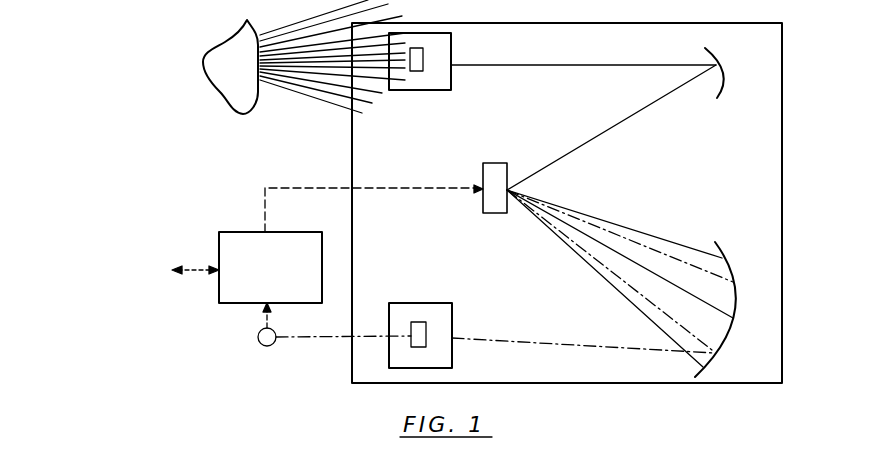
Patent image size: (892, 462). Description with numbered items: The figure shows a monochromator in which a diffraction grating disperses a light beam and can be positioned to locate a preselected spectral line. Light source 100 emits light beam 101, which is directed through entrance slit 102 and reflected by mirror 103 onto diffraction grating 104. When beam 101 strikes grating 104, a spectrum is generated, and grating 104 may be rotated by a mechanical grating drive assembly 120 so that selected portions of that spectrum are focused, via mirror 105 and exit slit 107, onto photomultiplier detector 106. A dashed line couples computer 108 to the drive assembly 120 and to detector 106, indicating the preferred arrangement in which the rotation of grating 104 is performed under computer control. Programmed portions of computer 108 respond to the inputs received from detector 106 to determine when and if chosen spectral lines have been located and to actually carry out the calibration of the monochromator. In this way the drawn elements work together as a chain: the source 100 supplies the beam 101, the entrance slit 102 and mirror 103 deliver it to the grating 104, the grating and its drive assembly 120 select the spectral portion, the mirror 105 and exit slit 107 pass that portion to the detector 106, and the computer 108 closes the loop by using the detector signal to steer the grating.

The light source 100 is at (229, 96).
The light beam 101 is at (527, 65).
The entrance slit 102 is at (453, 48).
The mirror 103 is at (718, 57).
The diffraction grating 104 is at (503, 214).
The mirror 105 is at (728, 335).
The photomultiplier detector 106 is at (258, 344).
The exit slit 107 is at (453, 320).
The computer 108 is at (279, 244).
The mechanical grating drive assembly 120 is at (518, 136).